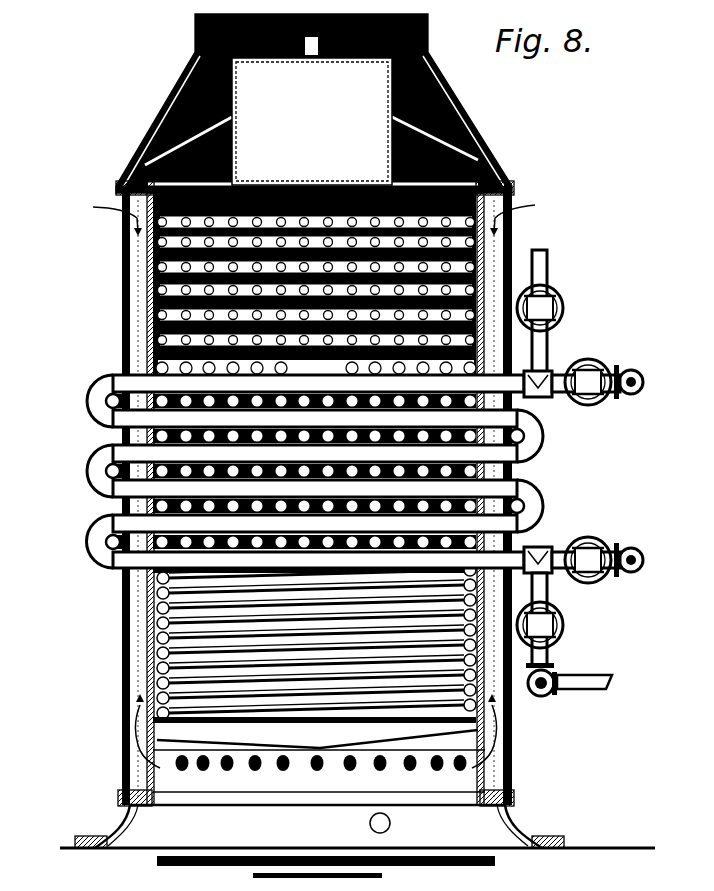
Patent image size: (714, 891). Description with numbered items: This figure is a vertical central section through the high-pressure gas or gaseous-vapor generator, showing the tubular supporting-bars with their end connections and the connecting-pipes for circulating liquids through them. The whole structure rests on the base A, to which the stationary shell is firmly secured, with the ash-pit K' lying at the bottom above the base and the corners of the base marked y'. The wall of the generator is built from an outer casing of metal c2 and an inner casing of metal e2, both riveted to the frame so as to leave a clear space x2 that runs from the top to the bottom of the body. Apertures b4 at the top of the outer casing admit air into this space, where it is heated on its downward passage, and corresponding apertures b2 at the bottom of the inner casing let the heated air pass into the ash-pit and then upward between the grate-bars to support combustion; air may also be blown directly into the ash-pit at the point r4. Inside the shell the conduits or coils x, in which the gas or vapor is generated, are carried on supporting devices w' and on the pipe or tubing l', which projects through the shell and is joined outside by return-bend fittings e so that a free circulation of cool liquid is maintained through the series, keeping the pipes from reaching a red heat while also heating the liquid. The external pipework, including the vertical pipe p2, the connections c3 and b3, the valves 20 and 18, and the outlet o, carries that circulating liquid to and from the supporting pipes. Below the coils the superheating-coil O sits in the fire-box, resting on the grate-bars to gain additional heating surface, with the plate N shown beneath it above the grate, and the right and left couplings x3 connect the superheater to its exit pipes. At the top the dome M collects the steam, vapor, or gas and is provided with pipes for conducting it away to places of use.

The dome M is at (312, 121).
The right and left couplings x3 is at (314, 285).
The conduits or coils x is at (314, 454).
The outer casing of metal c2 is at (317, 499).
The inner casing of metal e2 is at (315, 493).
The clear space x2 is at (315, 500).
The apertures b4 is at (314, 486).
The supporting devices w' is at (501, 241).
The superheating-coil O is at (314, 641).
The fire box plate N is at (319, 733).
The apertures b2 is at (321, 771).
The base A is at (357, 834).
The ash-pit K' is at (220, 826).
The base corner y' is at (312, 826).
The air inlet to ash-pit r4 is at (391, 823).
The return-bend fittings e is at (315, 471).
The pipe or tubing l' is at (318, 471).
The supply pipe p2 is at (551, 313).
The valve 20 is at (551, 308).
The upper tee connection c3 is at (583, 387).
The lower tee connection b3 is at (583, 552).
The drain pipe o is at (569, 634).
The drain valve 18 is at (553, 625).